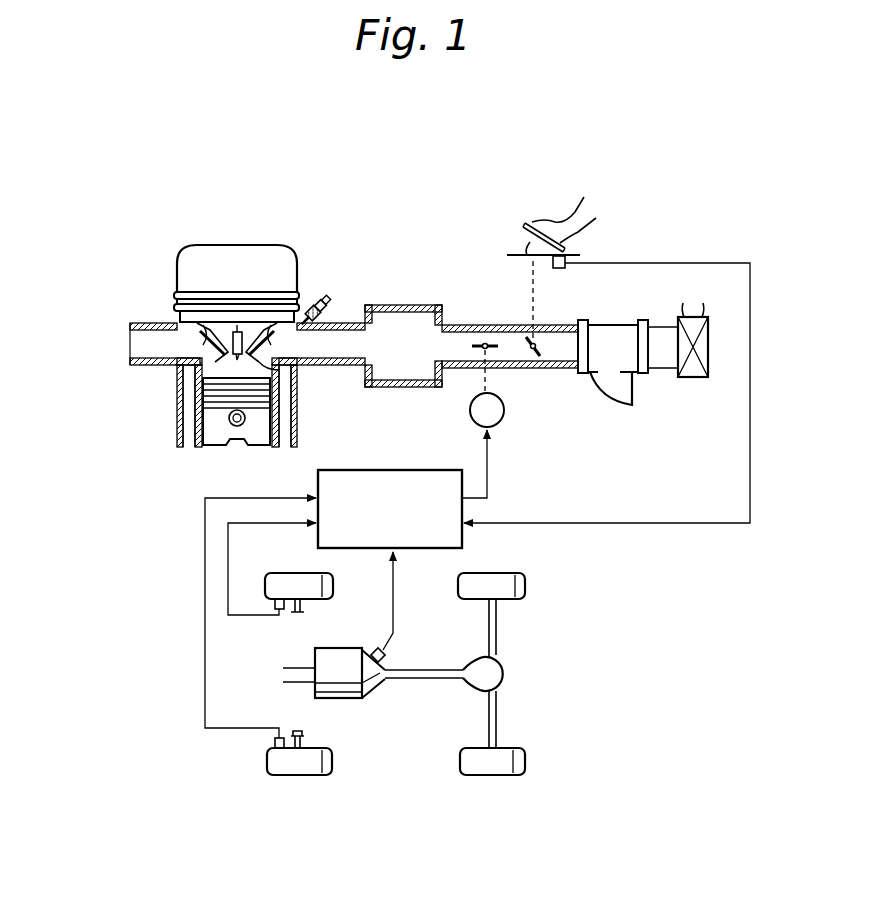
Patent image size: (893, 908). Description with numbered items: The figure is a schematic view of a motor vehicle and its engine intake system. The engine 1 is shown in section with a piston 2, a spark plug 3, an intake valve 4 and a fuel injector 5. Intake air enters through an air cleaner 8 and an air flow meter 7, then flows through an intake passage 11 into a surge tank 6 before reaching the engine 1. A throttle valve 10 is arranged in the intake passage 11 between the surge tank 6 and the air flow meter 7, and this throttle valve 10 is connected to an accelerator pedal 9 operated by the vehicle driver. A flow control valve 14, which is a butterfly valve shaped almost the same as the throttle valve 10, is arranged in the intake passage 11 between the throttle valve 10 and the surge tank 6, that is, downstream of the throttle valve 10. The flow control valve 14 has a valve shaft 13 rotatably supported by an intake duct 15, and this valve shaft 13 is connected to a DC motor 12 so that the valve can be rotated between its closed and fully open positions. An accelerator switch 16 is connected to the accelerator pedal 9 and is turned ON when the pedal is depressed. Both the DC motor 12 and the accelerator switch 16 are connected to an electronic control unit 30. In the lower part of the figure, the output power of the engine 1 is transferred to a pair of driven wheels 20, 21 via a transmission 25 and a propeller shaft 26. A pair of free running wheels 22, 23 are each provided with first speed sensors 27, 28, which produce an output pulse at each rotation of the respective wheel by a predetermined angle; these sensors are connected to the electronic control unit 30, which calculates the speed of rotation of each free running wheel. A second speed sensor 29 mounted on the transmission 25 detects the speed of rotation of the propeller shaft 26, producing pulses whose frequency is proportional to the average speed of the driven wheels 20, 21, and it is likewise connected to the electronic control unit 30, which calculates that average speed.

The engine 1 is at (246, 244).
The piston 2 is at (262, 448).
The spark plug 3 is at (240, 330).
The intake valve 4 is at (278, 340).
The fuel injector 5 is at (335, 297).
The surge tank 6 is at (386, 387).
The air flow meter 7 is at (610, 400).
The air cleaner 8 is at (690, 378).
The accelerator pedal 9 is at (527, 242).
The throttle valve 10 is at (530, 355).
The intake passage 11 is at (510, 350).
The DC motor 12 is at (497, 440).
The valve shaft 13 is at (484, 352).
The flow control valve 14 is at (480, 343).
The intake duct 15 is at (456, 325).
The accelerator switch 16 is at (559, 268).
The driven wheel 20 is at (490, 775).
The driven wheel 21 is at (485, 573).
The free running wheel 22 is at (290, 775).
The free running wheel 23 is at (296, 573).
The transmission 25 is at (345, 699).
The propeller shaft 26 is at (420, 683).
The first speed sensor 27 is at (270, 745).
The first speed sensor 28 is at (272, 605).
The second speed sensor 29 is at (390, 662).
The electronic control unit 30 is at (420, 470).